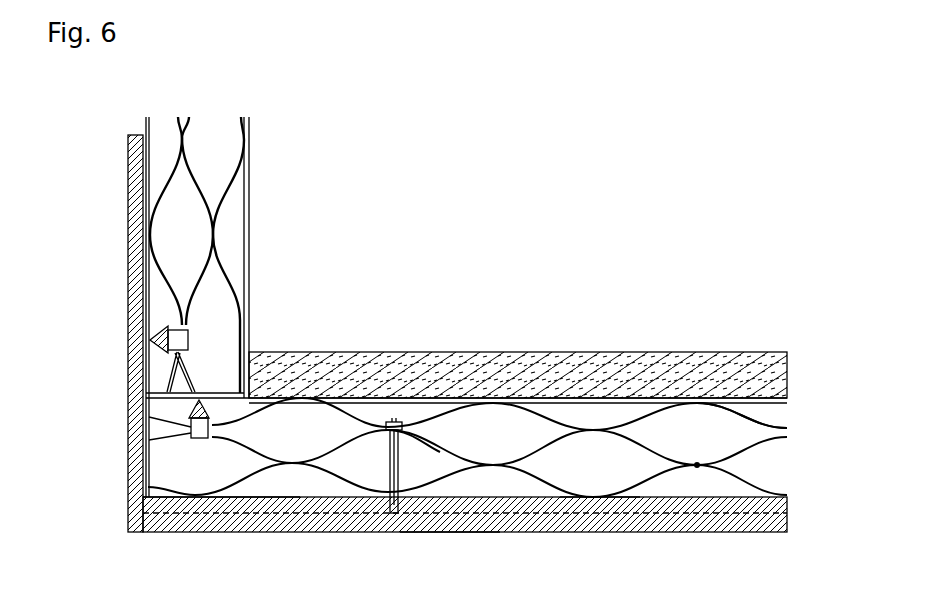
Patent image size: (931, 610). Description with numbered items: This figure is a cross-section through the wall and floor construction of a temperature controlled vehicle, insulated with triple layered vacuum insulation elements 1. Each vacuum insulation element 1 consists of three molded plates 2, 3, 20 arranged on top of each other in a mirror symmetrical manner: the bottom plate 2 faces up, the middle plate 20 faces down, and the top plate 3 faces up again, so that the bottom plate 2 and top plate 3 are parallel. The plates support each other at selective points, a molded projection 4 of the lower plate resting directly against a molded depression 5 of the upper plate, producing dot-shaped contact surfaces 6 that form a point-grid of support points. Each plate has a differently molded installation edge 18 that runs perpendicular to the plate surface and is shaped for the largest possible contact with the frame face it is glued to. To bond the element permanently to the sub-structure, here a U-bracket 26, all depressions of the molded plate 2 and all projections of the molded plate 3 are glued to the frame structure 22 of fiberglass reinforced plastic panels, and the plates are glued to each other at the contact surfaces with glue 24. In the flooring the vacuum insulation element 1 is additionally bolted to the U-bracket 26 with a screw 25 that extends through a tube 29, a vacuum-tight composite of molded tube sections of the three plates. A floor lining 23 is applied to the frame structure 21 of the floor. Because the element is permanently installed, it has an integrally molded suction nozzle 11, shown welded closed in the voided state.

The vacuum insulation element 1 is at (205, 97).
The molded plate 2 is at (540, 490).
The molded plate 3 is at (548, 415).
The molded projection 4 is at (718, 405).
The molded depression 5 is at (705, 463).
The contact surface 6 is at (291, 463).
The suction nozzle 11 is at (143, 343).
The installation edge 18 is at (128, 414).
The molded plate 20 is at (590, 493).
The frame structure 21 is at (265, 510).
The frame structure 22 is at (357, 397).
The floor lining 23 is at (683, 360).
The glue 24 is at (213, 235).
The screw 25 is at (387, 460).
The U-bracket 26 is at (448, 520).
The tube 29 is at (432, 433).